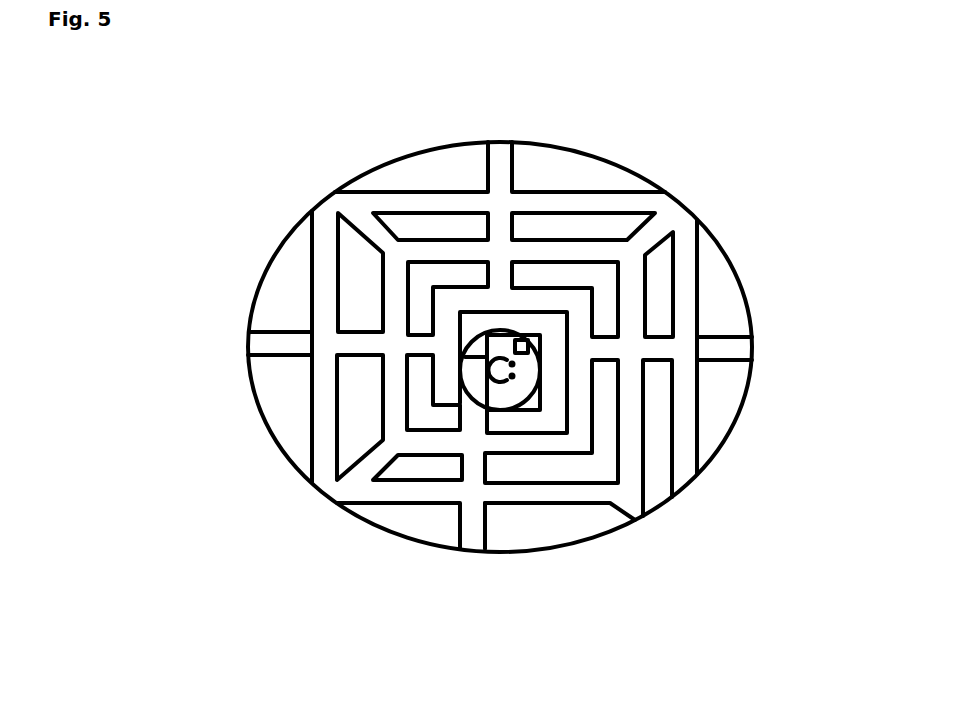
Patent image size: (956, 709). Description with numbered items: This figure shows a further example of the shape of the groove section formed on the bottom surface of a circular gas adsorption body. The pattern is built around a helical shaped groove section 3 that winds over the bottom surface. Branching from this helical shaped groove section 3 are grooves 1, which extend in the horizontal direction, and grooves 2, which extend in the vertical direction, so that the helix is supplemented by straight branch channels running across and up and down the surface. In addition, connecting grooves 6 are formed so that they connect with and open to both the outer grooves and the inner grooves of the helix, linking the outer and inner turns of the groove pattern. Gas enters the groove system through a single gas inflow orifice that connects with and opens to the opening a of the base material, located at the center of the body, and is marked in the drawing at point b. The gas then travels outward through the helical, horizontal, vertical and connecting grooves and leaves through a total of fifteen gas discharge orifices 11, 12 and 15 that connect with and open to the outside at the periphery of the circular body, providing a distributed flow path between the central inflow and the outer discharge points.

The grooves extending in the horizontal direction 1 is at (722, 347).
The grooves extending in the vertical direction 2 is at (505, 165).
The helical shaped groove section 3 is at (325, 390).
The connecting grooves 6 is at (378, 232).
The gas discharge orifice 11 is at (753, 348).
The gas discharge orifice 12 is at (470, 552).
The gas discharge orifice 15 is at (637, 510).
The opening of the base material a is at (520, 345).
The center node b is at (490, 378).